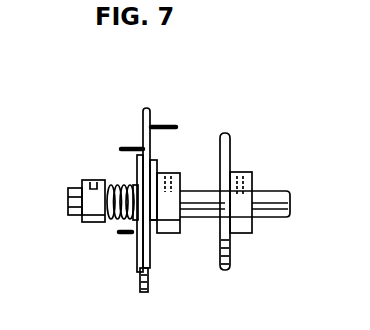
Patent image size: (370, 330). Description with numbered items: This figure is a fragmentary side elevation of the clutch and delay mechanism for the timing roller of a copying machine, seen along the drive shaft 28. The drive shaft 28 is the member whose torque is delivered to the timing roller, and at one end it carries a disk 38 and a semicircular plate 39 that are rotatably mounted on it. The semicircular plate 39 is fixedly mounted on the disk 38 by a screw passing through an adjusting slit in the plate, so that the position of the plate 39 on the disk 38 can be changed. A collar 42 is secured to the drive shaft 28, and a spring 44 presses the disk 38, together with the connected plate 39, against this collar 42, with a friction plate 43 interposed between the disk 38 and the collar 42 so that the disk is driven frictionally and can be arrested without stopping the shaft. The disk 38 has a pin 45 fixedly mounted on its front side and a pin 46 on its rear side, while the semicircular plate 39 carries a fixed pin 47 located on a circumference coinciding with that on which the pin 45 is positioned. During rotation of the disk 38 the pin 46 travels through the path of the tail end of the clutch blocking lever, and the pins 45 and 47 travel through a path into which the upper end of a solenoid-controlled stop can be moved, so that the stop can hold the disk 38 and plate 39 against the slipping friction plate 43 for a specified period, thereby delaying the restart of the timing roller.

The drive shaft 28 is at (266, 192).
The disk 38 is at (151, 137).
The semicircular plate 39 is at (136, 172).
The collar 42 is at (178, 234).
The friction plate 43 is at (150, 268).
The spring 44 is at (113, 225).
The pin 45 is at (118, 146).
The pin 46 is at (173, 123).
The fixed pin 47 is at (122, 237).